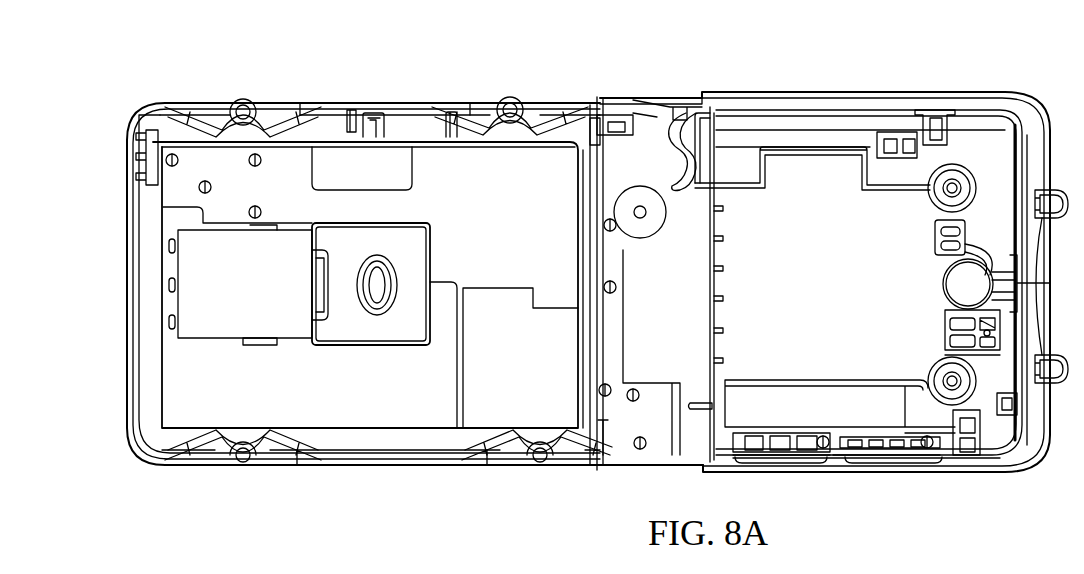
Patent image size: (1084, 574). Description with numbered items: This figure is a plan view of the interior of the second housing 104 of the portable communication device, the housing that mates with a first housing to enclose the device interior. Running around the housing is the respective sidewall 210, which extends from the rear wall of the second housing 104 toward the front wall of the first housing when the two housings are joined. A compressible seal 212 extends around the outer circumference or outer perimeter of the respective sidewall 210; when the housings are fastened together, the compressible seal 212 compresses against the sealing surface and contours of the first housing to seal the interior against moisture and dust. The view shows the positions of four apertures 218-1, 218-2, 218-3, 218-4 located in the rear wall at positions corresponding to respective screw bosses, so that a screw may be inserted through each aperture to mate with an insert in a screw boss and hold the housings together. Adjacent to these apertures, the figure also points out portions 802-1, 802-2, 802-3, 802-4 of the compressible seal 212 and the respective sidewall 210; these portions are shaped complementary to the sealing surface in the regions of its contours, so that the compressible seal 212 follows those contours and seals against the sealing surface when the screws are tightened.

The second housing 104 is at (1040, 110).
The respective sidewall 210 is at (419, 282).
The compressible seal 212 is at (592, 105).
The aperture 218-1 is at (243, 462).
The aperture 218-2 is at (540, 462).
The aperture 218-3 is at (510, 103).
The aperture 218-4 is at (243, 105).
The portion of the compressible seal and sidewall 802-1 is at (250, 430).
The portion of the compressible seal and sidewall 802-2 is at (541, 430).
The portion of the compressible seal and sidewall 802-3 is at (526, 134).
The portion of the compressible seal and sidewall 802-4 is at (262, 133).